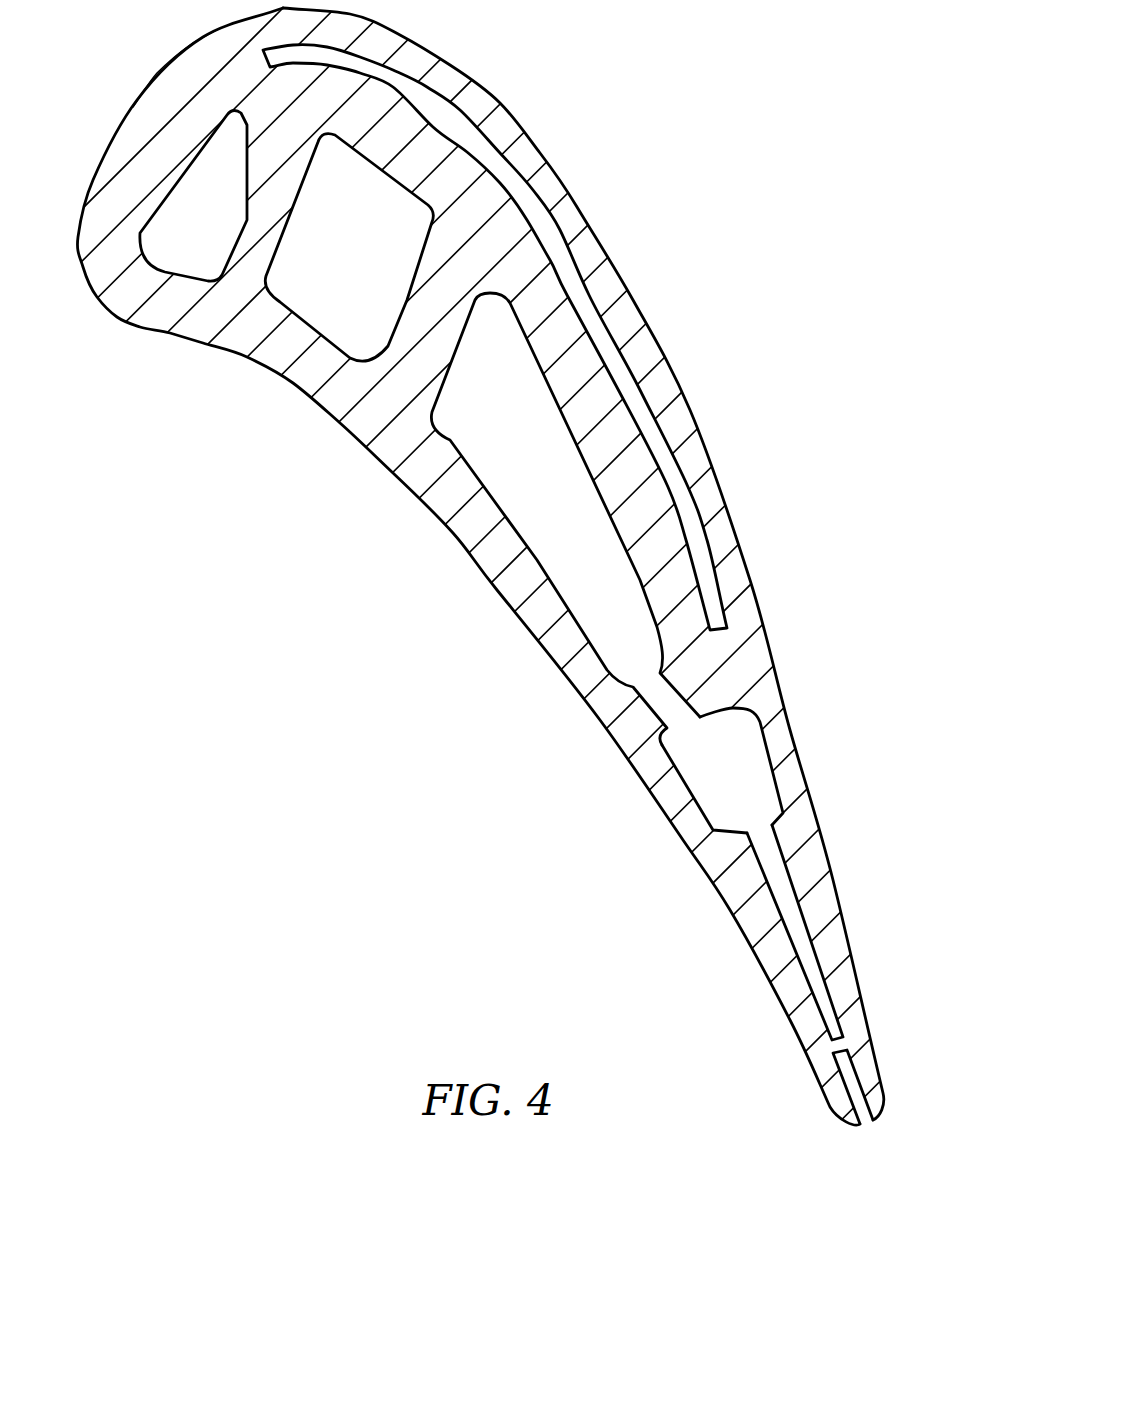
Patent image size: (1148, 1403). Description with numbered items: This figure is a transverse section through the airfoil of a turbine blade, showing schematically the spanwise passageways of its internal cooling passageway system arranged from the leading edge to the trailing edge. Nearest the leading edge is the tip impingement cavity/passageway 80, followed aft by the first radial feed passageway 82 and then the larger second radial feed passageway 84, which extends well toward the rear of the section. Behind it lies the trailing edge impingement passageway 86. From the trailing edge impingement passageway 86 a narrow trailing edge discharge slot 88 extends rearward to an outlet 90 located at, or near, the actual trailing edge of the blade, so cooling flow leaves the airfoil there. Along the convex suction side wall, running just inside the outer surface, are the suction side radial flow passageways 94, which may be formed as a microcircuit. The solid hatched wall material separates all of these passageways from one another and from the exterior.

The tip impingement cavity/passageway 80 is at (178, 243).
The first radial feed passageway 82 is at (323, 285).
The second radial feed passageway 84 is at (503, 450).
The trailing edge impingement passageway 86 is at (710, 813).
The trailing edge discharge slot 88 is at (822, 978).
The outlet 90 is at (870, 1133).
The suction side radial flow passageways 94 is at (677, 487).